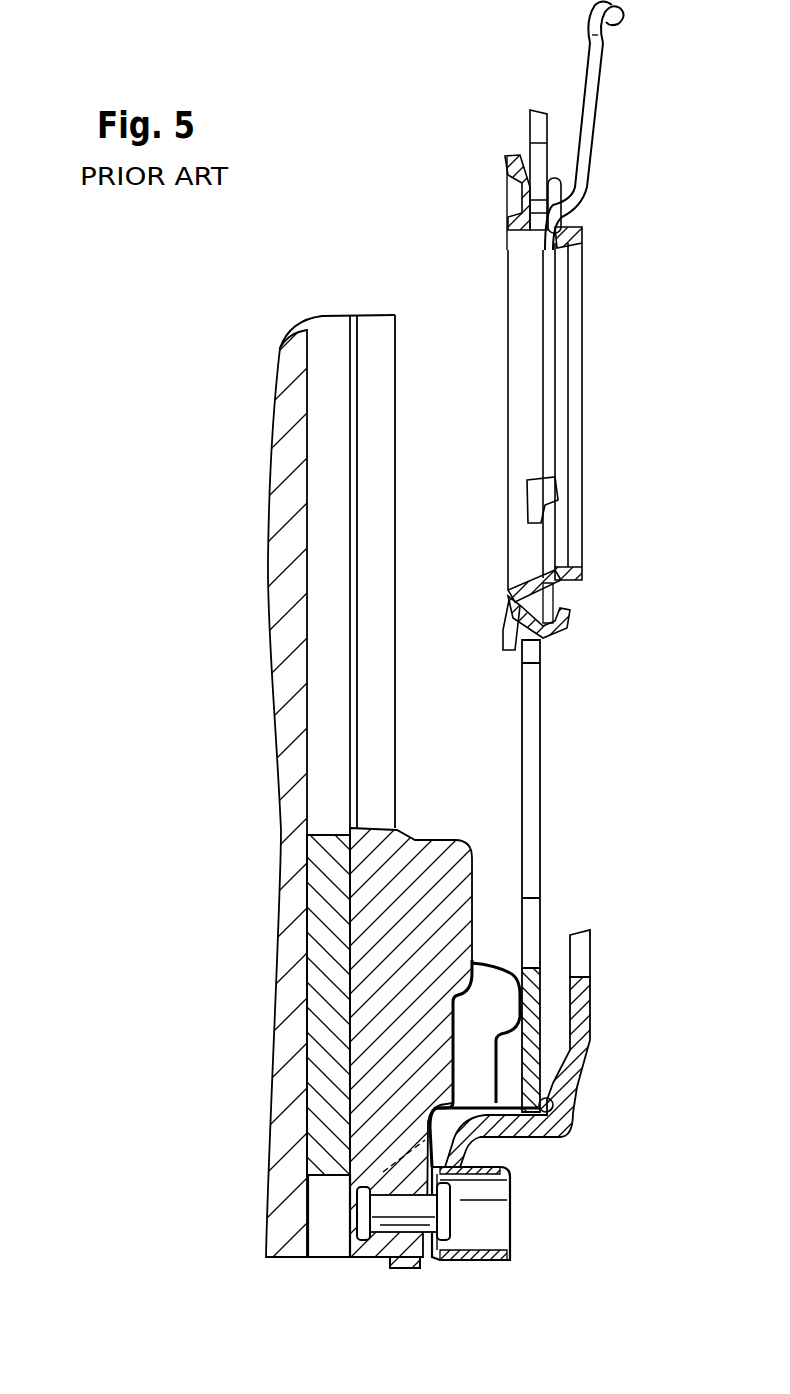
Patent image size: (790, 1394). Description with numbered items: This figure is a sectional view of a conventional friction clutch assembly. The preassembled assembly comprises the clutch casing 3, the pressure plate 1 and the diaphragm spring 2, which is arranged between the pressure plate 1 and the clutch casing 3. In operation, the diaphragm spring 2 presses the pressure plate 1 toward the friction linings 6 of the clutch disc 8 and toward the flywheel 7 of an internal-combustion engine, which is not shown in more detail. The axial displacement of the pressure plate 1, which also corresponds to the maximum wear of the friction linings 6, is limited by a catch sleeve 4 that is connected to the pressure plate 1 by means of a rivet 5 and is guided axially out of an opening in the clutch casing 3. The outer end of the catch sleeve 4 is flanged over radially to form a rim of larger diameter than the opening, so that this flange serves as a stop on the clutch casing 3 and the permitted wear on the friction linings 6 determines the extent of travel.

The pressure plate 1 is at (450, 915).
The diaphragm spring 2 is at (530, 1030).
The clutch casing 3 is at (567, 1098).
The catch sleeve 4 is at (470, 1257).
The rivet 5 is at (400, 1207).
The friction linings 6 is at (325, 1033).
The flywheel 7 is at (297, 807).
The clutch disc 8 is at (330, 592).